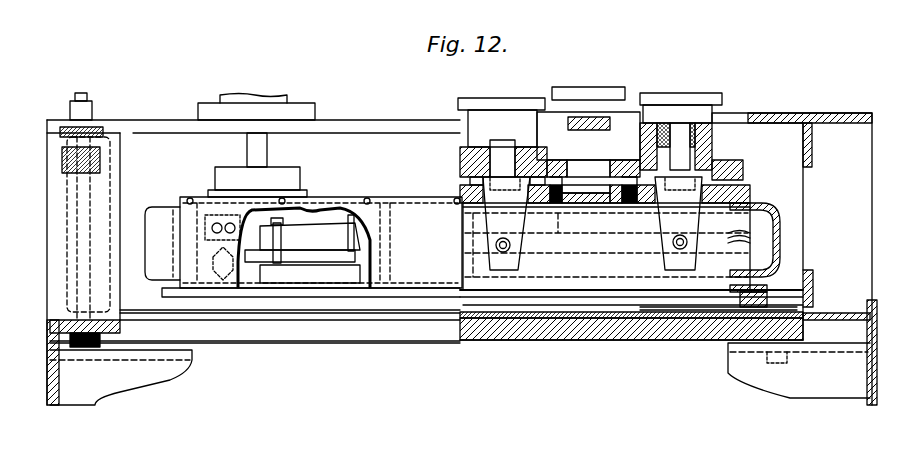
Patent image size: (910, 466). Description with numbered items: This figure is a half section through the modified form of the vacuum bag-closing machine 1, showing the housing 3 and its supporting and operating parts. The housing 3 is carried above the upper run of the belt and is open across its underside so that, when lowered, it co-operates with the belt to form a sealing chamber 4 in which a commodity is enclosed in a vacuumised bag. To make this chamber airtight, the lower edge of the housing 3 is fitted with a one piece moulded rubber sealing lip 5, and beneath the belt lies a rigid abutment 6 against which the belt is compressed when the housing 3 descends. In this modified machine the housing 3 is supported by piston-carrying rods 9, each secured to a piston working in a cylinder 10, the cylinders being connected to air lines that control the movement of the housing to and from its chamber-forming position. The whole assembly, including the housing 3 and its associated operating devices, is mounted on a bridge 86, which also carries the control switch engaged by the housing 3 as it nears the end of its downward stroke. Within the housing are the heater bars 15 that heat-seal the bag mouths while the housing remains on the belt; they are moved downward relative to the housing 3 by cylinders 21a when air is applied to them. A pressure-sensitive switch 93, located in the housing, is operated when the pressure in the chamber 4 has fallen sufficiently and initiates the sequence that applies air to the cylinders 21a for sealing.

The base plate 1 is at (615, 312).
The housing 3 is at (773, 203).
The sealing chamber 4 is at (597, 298).
The rubber sealing lip 5 is at (767, 296).
The rigid abutment 6 is at (645, 318).
The piston-carrying rod 9 is at (266, 156).
The cylinder 10 is at (293, 101).
The heater bar 15 is at (557, 290).
The cylinder 21a is at (680, 92).
The bridge 86 is at (348, 120).
The pressure-sensitive switch 93 is at (362, 247).